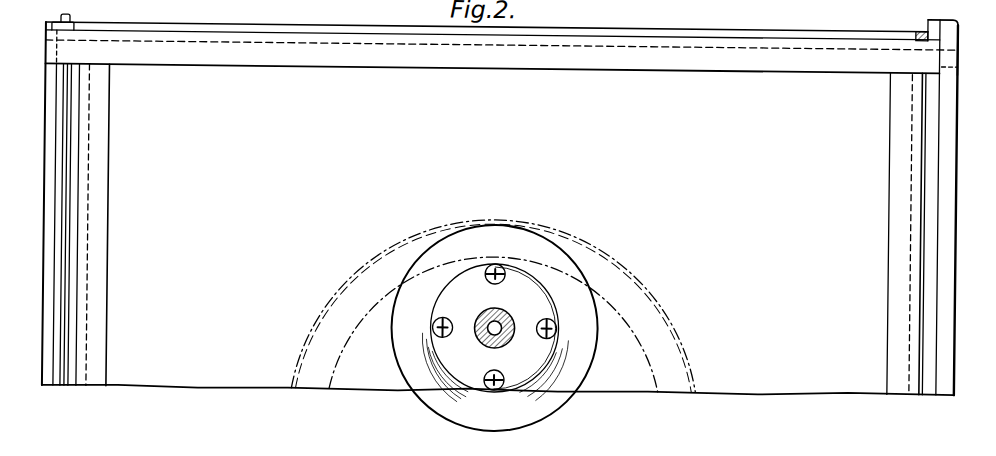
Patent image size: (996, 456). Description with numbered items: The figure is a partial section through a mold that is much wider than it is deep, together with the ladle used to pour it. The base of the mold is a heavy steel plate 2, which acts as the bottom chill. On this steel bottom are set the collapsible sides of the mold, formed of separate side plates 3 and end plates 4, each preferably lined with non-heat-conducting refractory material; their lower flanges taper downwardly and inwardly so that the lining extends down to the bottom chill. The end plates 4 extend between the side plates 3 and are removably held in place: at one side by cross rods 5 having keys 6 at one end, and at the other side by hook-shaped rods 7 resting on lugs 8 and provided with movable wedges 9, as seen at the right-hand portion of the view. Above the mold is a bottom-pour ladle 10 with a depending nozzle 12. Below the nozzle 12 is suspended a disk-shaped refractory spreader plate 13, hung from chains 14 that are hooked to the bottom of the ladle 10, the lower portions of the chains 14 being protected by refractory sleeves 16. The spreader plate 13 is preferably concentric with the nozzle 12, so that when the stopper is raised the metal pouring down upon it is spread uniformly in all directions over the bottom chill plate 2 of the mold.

The heavy steel plate 2 is at (500, 198).
The side plates 3 is at (501, 48).
The end plates 4 is at (82, 207).
The cross rods 5 is at (62, 175).
The keys 6 is at (49, 29).
The hook-shaped rods 7 is at (950, 178).
The lugs 8 is at (949, 53).
The movable wedges 9 is at (927, 31).
The bottom-pour ladle 10 is at (654, 305).
The depending nozzle 12 is at (509, 337).
The disk-shaped refractory spreader plate 13 is at (494, 328).
The chains 14 is at (490, 283).
The refractory sleeves 16 is at (540, 318).